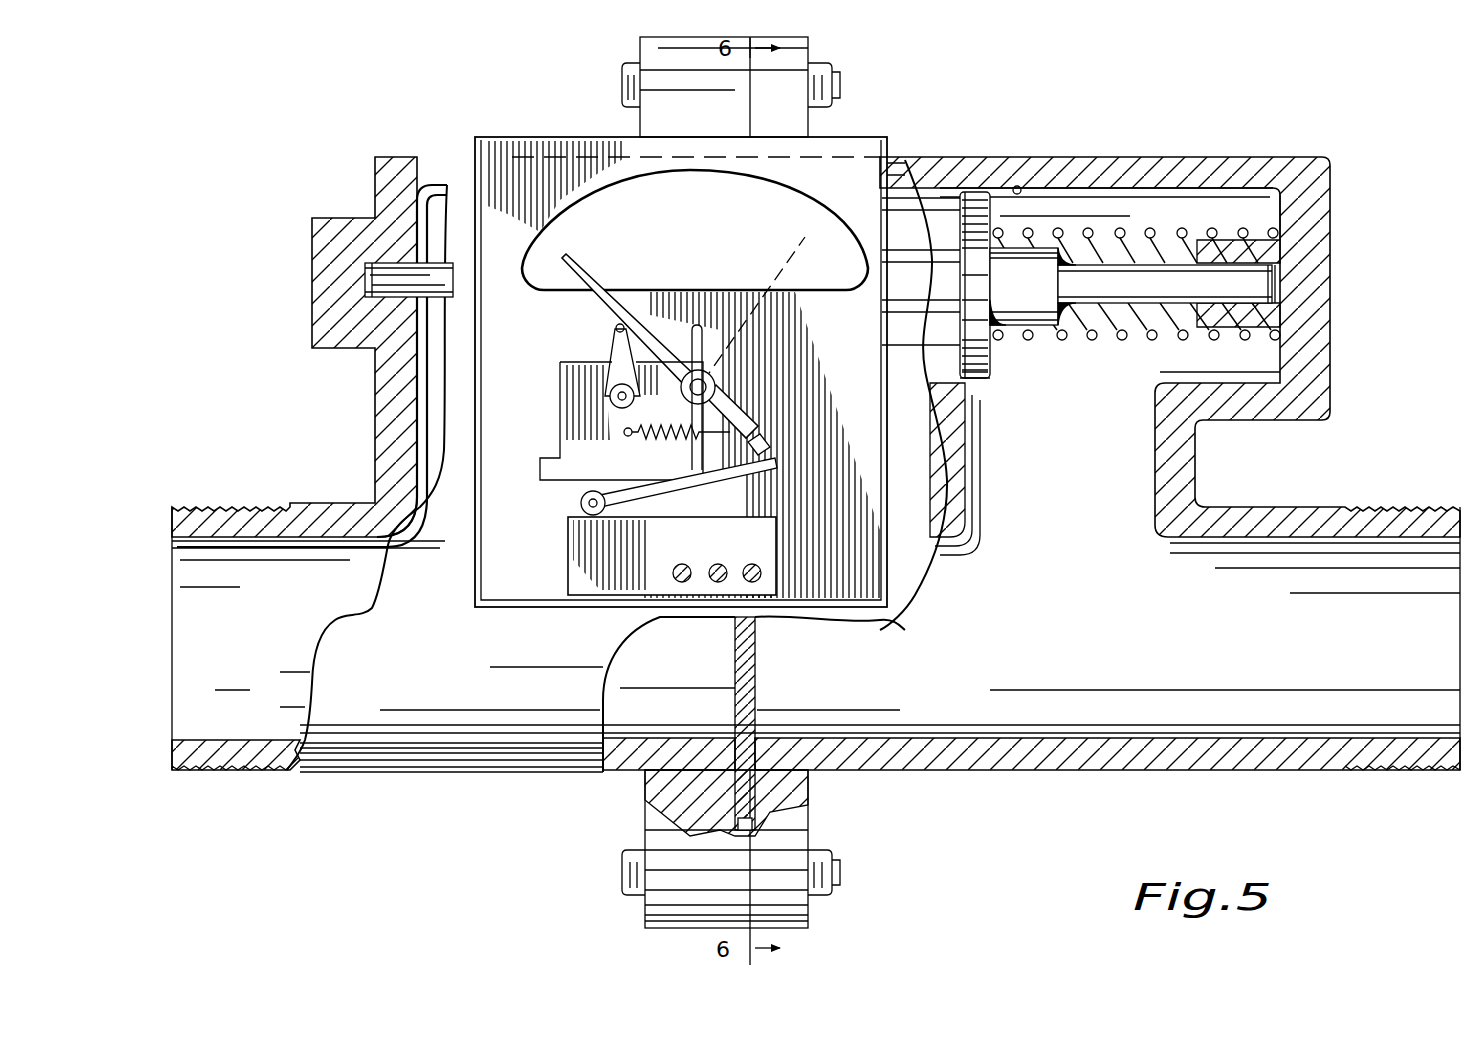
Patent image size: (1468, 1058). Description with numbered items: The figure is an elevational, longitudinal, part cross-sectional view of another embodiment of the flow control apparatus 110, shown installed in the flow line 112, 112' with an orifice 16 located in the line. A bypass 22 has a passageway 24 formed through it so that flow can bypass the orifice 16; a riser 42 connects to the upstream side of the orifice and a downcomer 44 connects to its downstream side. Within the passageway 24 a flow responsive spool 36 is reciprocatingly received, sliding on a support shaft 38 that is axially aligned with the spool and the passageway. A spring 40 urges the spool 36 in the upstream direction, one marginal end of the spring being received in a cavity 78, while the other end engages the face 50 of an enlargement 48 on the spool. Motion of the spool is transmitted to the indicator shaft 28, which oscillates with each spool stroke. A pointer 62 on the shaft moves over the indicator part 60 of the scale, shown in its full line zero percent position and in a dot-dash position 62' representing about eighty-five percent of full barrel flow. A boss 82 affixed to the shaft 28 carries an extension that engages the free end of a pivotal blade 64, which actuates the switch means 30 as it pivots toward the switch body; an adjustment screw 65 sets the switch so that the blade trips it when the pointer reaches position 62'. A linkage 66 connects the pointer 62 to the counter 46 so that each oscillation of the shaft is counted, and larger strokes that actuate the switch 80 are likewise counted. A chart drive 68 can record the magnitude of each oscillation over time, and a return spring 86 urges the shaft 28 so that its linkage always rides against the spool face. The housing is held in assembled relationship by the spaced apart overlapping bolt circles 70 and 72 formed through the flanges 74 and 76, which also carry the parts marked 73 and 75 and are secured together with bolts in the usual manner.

The orifice 16 is at (744, 680).
The bypass 22 is at (1168, 145).
The passageway 24 is at (1022, 187).
The indicator shaft 28 is at (718, 392).
The switch means 30 is at (625, 550).
The spool 36 is at (1012, 382).
The support shaft 38 is at (440, 283).
The spring 40 is at (1108, 337).
The riser 42 is at (413, 445).
The downcomer 44 is at (1001, 469).
The counter 46 is at (565, 400).
The enlargement 48 is at (984, 380).
The face 50 is at (996, 363).
The indicator part 60 is at (768, 200).
The pointer 62 is at (660, 339).
The pointer dot-dash position 62' is at (753, 310).
The blade 64 is at (772, 469).
The adjustment screw 65 is at (766, 450).
The linkage 66 is at (618, 354).
The chart drive 68 is at (703, 347).
The bolt circle 70 is at (838, 877).
The bolt circle 72 is at (840, 86).
The flange 73 is at (795, 116).
The flange 74 is at (793, 835).
The flange bolt 75 is at (653, 110).
The flange 76 is at (645, 842).
The cavity 78 is at (1268, 212).
The switch 80 is at (762, 575).
The boss 82 is at (714, 382).
The return spring 86 is at (632, 436).
The apparatus 110 is at (300, 408).
The threaded end 112 is at (231, 618).
The threaded end 112' is at (1402, 618).